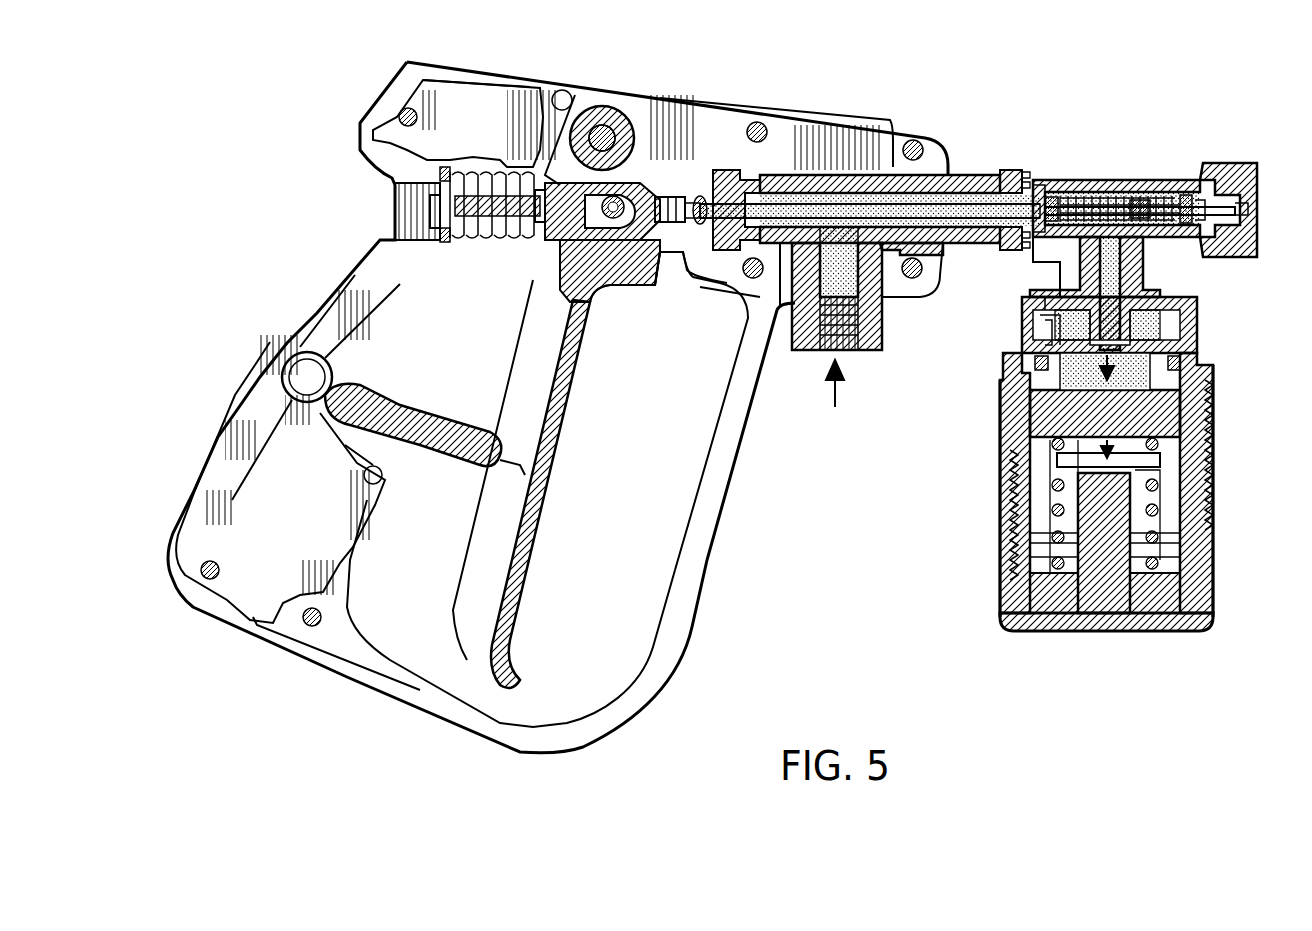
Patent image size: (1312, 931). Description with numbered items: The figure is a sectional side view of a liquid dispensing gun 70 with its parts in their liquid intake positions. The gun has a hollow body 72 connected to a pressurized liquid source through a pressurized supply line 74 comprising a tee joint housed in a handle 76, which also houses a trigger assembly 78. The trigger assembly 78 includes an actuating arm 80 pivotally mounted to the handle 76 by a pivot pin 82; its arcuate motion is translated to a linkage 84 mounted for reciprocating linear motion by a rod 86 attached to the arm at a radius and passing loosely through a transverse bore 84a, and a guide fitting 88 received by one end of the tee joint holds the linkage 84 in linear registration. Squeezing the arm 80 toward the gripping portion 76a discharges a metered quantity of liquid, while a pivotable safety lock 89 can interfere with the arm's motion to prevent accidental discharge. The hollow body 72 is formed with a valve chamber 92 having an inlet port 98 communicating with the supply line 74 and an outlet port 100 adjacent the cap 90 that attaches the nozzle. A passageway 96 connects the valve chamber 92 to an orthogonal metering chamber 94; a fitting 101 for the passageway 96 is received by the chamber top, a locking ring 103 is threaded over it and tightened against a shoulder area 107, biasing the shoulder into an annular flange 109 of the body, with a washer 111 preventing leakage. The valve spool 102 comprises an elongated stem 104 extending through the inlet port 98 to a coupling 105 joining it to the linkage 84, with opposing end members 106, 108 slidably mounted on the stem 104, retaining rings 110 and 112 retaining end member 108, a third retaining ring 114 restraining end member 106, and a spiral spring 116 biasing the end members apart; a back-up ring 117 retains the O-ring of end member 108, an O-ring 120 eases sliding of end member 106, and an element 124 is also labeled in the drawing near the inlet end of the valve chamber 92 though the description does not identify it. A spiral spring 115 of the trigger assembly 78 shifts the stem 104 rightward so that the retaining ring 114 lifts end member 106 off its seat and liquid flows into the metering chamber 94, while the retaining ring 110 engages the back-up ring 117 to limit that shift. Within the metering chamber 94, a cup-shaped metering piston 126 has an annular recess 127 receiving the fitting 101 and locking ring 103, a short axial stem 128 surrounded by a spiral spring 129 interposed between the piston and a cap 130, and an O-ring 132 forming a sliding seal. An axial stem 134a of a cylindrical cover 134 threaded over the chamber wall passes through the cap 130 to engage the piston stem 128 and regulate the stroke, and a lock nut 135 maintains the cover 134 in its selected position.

The dispensing gun 70 is at (970, 135).
The hollow body 72 is at (1146, 182).
The pressurized supply line 74 is at (880, 305).
The handle 76 is at (505, 60).
The gripping portion 76a is at (385, 495).
The trigger assembly 78 is at (635, 112).
The actuating arm 80 is at (570, 398).
The pivot pin 82 is at (600, 125).
The linkage 84 is at (617, 287).
The transverse bore 84a is at (645, 282).
The rod 86 is at (635, 200).
The guide fitting 88 is at (723, 283).
The safety lock 89 is at (440, 425).
The cap 90 is at (1220, 165).
The valve chamber 92 is at (1115, 195).
The metering chamber 94 is at (1180, 332).
The passageway 96 is at (1130, 262).
The inlet port 98 is at (1012, 175).
The outlet port 100 is at (1250, 215).
The fitting 101 is at (1148, 280).
The valve spool 102 is at (1185, 195).
The locking ring 103 is at (1040, 332).
The elongated stem 104 is at (1185, 240).
The coupling 105 is at (698, 205).
The end member 106 is at (1095, 190).
The shoulder area 107 is at (1030, 310).
The end member 108 is at (1240, 175).
The annular flange 109 is at (1022, 290).
The retaining ring 110 is at (1240, 255).
The washer 111 is at (1180, 315).
The retaining ring 112 is at (1248, 205).
The third retaining ring 114 is at (1035, 180).
The spiral spring 115 is at (470, 175).
The spiral spring 116 is at (1108, 180).
The back-up ring 117 is at (1195, 200).
The O-ring 120 is at (1035, 262).
The seal washer 124 is at (1055, 190).
The metering piston 126 is at (1213, 408).
The annular recess 127 is at (1125, 393).
The axial stem 128 is at (1180, 450).
The spiral spring 129 is at (1185, 508).
The cap 130 is at (1185, 580).
The O-ring 132 is at (1030, 370).
The cylindrical cover 134 is at (1085, 633).
The axial stem 134a is at (1095, 500).
The lock nut 135 is at (1003, 390).